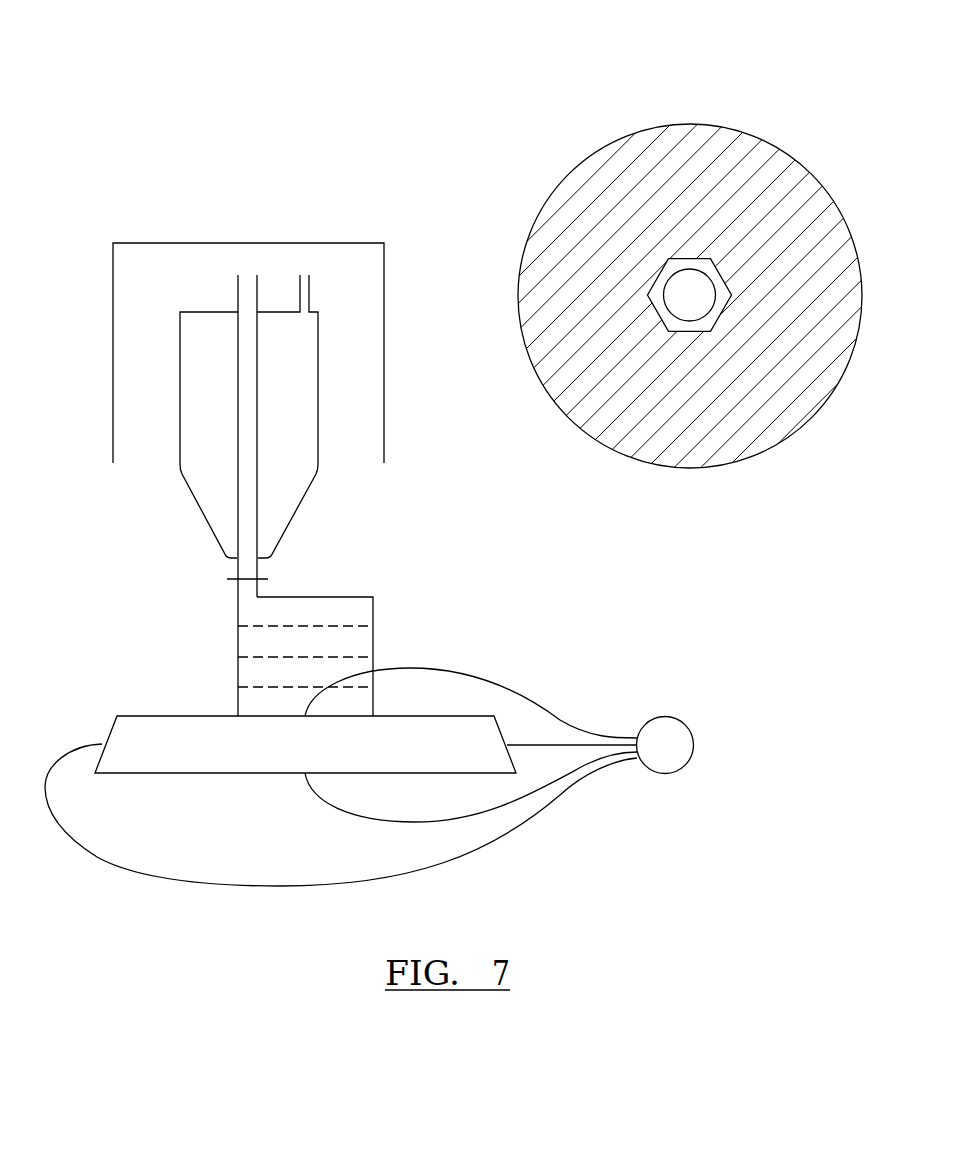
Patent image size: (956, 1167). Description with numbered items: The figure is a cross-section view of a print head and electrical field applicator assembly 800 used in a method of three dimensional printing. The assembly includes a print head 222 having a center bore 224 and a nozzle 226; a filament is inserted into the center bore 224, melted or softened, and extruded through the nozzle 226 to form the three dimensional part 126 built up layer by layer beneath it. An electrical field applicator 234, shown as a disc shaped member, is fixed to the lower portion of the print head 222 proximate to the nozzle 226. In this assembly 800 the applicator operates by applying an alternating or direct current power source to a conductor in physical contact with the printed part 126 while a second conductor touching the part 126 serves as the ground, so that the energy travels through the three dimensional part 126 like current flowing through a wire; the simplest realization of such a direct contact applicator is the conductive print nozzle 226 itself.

The print head and electrical field applicator assembly 800 is at (532, 68).
The electrical field applicator 234 is at (802, 108).
The print head 222 is at (183, 373).
The center bore 224 is at (257, 330).
The nozzle 226 is at (257, 547).
The three dimensional part 126 is at (387, 590).